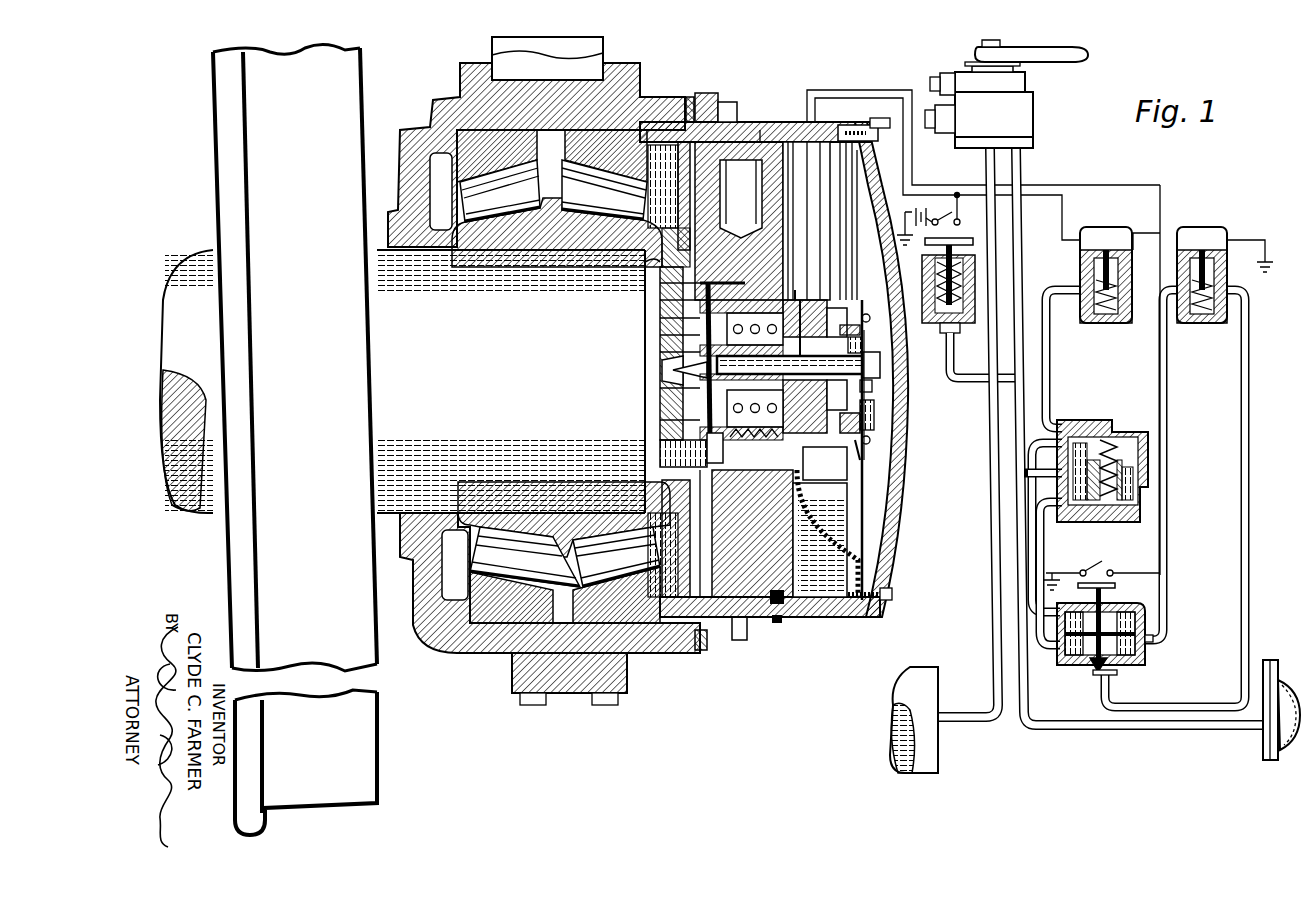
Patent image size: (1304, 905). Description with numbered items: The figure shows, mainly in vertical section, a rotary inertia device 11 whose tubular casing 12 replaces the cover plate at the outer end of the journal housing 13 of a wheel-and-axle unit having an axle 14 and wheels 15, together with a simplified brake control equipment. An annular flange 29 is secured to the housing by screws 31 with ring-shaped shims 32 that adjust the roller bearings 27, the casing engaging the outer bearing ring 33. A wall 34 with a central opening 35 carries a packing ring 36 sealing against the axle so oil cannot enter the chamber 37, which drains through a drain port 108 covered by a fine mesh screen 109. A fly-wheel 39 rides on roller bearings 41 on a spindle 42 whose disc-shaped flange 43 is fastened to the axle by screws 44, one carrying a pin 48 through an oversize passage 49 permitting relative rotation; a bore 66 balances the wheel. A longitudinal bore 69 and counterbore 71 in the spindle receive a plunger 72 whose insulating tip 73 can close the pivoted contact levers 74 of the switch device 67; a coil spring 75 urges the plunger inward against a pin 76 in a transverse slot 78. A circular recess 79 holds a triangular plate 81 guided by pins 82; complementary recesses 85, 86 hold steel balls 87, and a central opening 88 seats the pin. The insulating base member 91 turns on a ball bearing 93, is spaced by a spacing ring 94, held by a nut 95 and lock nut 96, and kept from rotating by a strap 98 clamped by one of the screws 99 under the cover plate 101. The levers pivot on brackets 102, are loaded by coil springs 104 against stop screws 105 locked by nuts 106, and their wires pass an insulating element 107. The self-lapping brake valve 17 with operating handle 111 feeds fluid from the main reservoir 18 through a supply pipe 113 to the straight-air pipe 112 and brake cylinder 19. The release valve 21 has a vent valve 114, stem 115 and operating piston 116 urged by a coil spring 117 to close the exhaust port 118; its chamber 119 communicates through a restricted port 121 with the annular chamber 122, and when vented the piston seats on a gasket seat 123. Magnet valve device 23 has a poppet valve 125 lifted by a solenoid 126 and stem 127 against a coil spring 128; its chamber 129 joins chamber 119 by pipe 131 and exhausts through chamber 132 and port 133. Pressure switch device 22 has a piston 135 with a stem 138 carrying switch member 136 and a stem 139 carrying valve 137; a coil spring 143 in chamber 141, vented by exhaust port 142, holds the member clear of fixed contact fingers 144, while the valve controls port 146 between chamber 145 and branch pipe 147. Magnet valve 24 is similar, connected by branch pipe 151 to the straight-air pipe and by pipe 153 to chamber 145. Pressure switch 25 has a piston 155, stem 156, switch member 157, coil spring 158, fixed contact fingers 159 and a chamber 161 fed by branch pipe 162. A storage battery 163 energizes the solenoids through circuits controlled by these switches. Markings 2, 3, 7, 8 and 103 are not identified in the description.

The brake housing wall 2 is at (701, 247).
The fluid passage 3 is at (766, 155).
The pin 7 is at (870, 318).
The plate 8 is at (741, 380).
The rotary inertia device 11 is at (838, 618).
The tubular casing 12 is at (745, 122).
The journal housing 13 is at (468, 85).
The axle 14 is at (196, 262).
The wheels 15 is at (237, 138).
The self-lapping brake valve 17 is at (1043, 98).
The main reservoir 18 is at (922, 690).
The brake cylinder 19 is at (1261, 758).
The release and reapplication valve device 21 is at (1076, 415).
The pressure operated switch device 22 is at (1150, 674).
The magnet valve device 23 is at (1104, 223).
The magnet valve device 24 is at (1208, 223).
The pressure operated switch 25 is at (963, 251).
The roller bearings 27 is at (575, 180).
The annular flange 29 is at (700, 93).
The screws 31 is at (726, 102).
The shims 32 is at (688, 97).
The outer bearing ring 33 is at (576, 141).
The partition or wall 34 is at (676, 222).
The central opening 35 is at (660, 268).
The packing ring 36 is at (655, 480).
The chamber 37 is at (758, 130).
The fly-wheel 39 is at (780, 238).
The roller bearings 41 is at (741, 328).
The spindle 42 is at (652, 262).
The disc-shaped flange 43 is at (670, 440).
The screws 44 is at (672, 452).
The pin 48 is at (752, 533).
The bore or passage 49 is at (806, 478).
The bore 66 is at (741, 199).
The switch device 67 is at (880, 442).
The longitudinal bore 69 is at (864, 350).
The counterbore 71 is at (668, 402).
The plunger 72 is at (670, 371).
The end tip of insulating material 73 is at (878, 362).
The pivoted contact levers 74 is at (878, 372).
The coil spring 75 is at (672, 352).
The pin 76 is at (672, 420).
The transverse slot 78 is at (672, 388).
The circular recess 79 is at (739, 221).
The triangular plate 81 is at (722, 273).
The pins 82 is at (732, 350).
The recesses 85 is at (660, 283).
The recesses 86 is at (672, 318).
The steel ball 87 is at (672, 300).
The central opening 88 is at (672, 335).
The base member 91 is at (799, 323).
The ball bearing 93 is at (759, 442).
The spacing ring 94 is at (755, 368).
The nut 95 is at (862, 330).
The lock nut 96 is at (872, 388).
The strap 98 is at (820, 540).
The screws 99 is at (880, 122).
The end or cover plate 101 is at (875, 525).
The metallic supporting brackets 102 is at (874, 420).
The block 103 is at (858, 300).
The coil spring 104 is at (862, 403).
The stop screw 105 is at (862, 470).
The nut 106 is at (870, 440).
The insulating element 107 is at (800, 122).
The drain port 108 is at (786, 596).
The fine mesh screen 109 is at (778, 623).
The operating handle 111 is at (1062, 54).
The straight-air pipe 112 is at (1020, 160).
The supply pipe 113 is at (986, 160).
The vent valve 114 is at (1125, 523).
The stem 115 is at (1140, 490).
The operating piston 116 is at (1148, 460).
The coil spring 117 is at (1110, 428).
The exhaust port 118 is at (1105, 523).
The chamber 119 is at (1148, 445).
The restricted port 121 is at (1040, 487).
The annular chamber 122 is at (1148, 475).
The gasket seat 123 is at (1148, 432).
The valve 125 is at (1085, 287).
The electromagnet winding or solenoid 126 is at (1088, 238).
The plunger or stem 127 is at (1085, 262).
The coil spring 128 is at (1090, 312).
The chamber 129 is at (1090, 325).
The pipe 131 is at (1048, 363).
The chamber 132 is at (1085, 275).
The exhaust port 133 is at (1134, 248).
The piston 135 is at (1066, 648).
The switch contact member 136 is at (1116, 585).
The valve 137 is at (1103, 676).
The stem 138 is at (1066, 612).
The stem 139 is at (1120, 670).
The chamber 141 is at (1130, 606).
The exhaust port 142 is at (1140, 632).
The coil spring 143 is at (1070, 630).
The fixed contact fingers 144 is at (1102, 572).
The chamber 145 is at (1066, 664).
The port 146 is at (1088, 672).
The branch pipe 147 is at (1100, 700).
The branch pipe 151 is at (1248, 390).
The pipe 153 is at (1166, 390).
The piston 155 is at (933, 292).
The stem 156 is at (944, 245).
The switch member 157 is at (974, 210).
The coil spring 158 is at (932, 268).
The fixed contact fingers 159 is at (938, 212).
The chamber 161 is at (955, 333).
The branch pipe 162 is at (965, 380).
The storage battery 163 is at (904, 204).